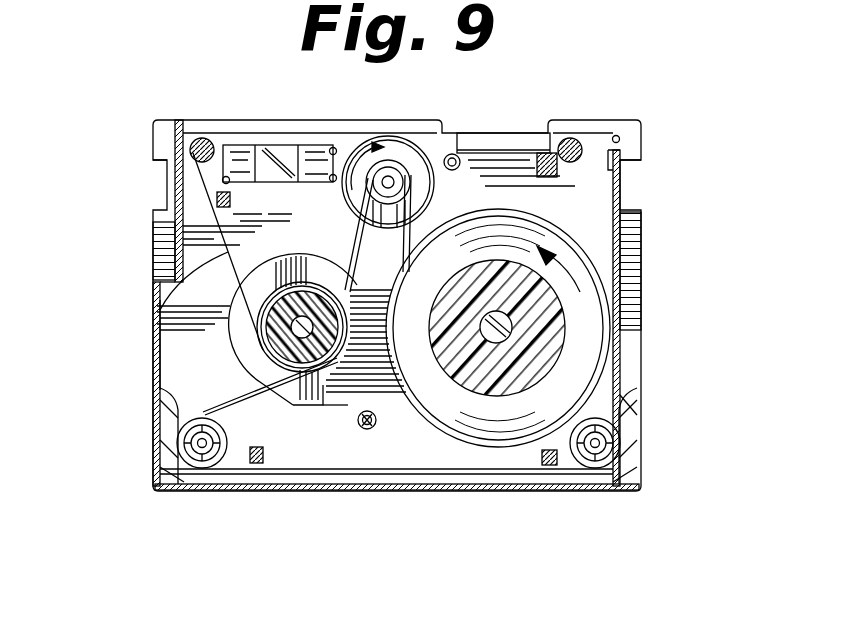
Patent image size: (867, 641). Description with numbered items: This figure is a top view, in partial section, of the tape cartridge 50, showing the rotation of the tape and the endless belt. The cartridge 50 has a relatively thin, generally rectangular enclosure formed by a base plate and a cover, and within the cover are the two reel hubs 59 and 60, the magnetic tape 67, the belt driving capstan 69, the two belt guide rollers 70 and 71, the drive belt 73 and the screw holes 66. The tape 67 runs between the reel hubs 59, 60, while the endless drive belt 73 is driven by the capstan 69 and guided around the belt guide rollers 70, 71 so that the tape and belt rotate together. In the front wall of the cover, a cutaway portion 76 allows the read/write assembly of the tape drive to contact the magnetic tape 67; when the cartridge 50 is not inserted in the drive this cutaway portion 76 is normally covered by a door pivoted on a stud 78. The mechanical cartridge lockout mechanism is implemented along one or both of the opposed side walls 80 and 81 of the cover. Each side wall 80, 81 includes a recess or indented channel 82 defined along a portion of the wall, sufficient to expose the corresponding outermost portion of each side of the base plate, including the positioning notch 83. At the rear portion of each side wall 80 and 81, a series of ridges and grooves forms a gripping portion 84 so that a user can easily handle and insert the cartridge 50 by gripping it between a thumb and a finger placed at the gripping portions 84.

The tape cartridge 50 is at (223, 386).
The reel hub 59 is at (330, 420).
The reel hub 60 is at (547, 306).
The screw holes 66 is at (458, 158).
The tape 67 is at (165, 314).
The belt driving capstan 69 is at (405, 142).
The belt guide roller 70 is at (587, 458).
The belt guide roller 71 is at (217, 455).
The drive belt 73 is at (293, 405).
The cutaway portion 76 is at (512, 130).
The stud 78 is at (621, 137).
The side wall 80 is at (617, 407).
The side wall 81 is at (160, 343).
The recess or indented channel 82 is at (158, 227).
The positioning notch 83 is at (158, 187).
The gripping portion 84 is at (153, 450).